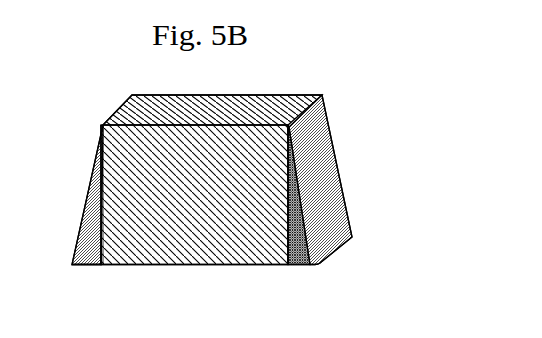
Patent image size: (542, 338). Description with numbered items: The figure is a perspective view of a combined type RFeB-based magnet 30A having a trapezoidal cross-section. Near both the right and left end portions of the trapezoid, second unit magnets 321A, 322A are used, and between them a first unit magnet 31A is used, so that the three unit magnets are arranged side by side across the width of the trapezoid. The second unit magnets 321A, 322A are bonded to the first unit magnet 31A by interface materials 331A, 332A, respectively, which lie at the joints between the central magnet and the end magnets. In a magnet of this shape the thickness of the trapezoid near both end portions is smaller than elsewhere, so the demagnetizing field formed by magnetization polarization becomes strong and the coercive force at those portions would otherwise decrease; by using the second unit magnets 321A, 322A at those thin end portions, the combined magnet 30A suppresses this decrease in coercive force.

The combined type RFeB-based magnet 30A is at (362, 252).
The first unit magnet 31A is at (190, 250).
The second unit magnet 321A is at (86, 207).
The second unit magnet 322A is at (342, 205).
The interface material 331A is at (96, 265).
The interface material 332A is at (286, 265).